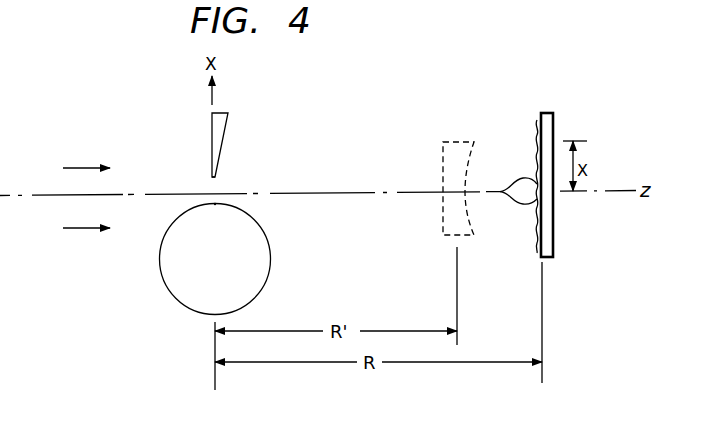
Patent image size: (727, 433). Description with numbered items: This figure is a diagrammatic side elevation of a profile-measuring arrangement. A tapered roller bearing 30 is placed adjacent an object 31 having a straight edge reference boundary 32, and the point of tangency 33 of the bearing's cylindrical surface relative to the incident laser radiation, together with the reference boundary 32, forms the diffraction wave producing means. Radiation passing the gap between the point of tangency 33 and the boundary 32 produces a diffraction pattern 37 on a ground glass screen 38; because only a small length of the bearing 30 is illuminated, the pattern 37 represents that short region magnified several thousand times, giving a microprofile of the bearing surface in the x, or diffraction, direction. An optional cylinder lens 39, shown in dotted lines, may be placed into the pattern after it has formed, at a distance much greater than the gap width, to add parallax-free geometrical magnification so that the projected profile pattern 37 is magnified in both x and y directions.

The tapered roller bearing 30 is at (232, 288).
The object 31 is at (218, 122).
The straight edge reference boundary 32 is at (215, 177).
The point of tangency 33 is at (215, 204).
The diffraction pattern 37 is at (513, 225).
The ground glass screen 38 is at (545, 112).
The cylinder lens 39 is at (453, 142).